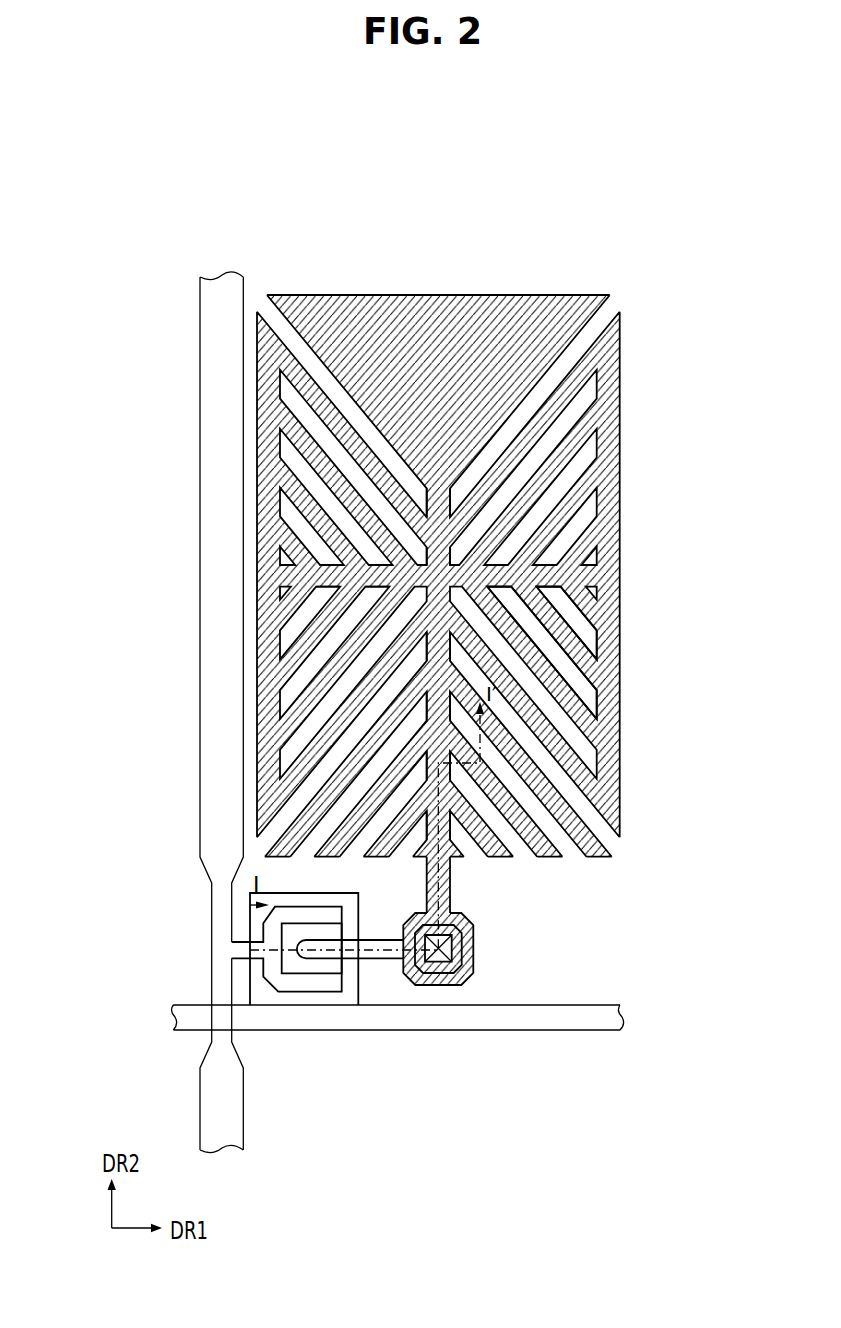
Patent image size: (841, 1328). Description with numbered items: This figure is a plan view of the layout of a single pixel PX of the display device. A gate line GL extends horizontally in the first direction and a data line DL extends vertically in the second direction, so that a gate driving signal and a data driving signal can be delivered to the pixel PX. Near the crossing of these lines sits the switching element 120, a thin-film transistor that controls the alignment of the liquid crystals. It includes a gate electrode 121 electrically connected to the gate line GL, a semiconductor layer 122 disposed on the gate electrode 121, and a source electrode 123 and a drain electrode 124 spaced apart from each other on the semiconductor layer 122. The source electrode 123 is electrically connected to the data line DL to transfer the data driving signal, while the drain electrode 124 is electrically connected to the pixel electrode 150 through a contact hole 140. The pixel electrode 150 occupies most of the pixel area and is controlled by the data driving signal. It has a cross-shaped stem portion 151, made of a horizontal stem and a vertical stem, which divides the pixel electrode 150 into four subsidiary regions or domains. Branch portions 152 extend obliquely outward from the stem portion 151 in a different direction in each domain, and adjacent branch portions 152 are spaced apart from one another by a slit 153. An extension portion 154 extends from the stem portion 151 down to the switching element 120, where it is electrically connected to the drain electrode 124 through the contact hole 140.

The switching element 120 is at (335, 1023).
The gate electrode 121 is at (272, 1002).
The semiconductor layer 122 is at (330, 967).
The source electrode 123 is at (308, 985).
The drain electrode 124 is at (382, 953).
The contact hole 140 is at (462, 949).
The pixel electrode 150 is at (501, 604).
The stem portion 151 is at (553, 577).
The branch portions 152 is at (565, 637).
The slit 153 is at (547, 702).
The extension portion 154 is at (555, 885).
The data line DL is at (224, 285).
The gate line GL is at (173, 1018).
The pixel PX is at (474, 224).